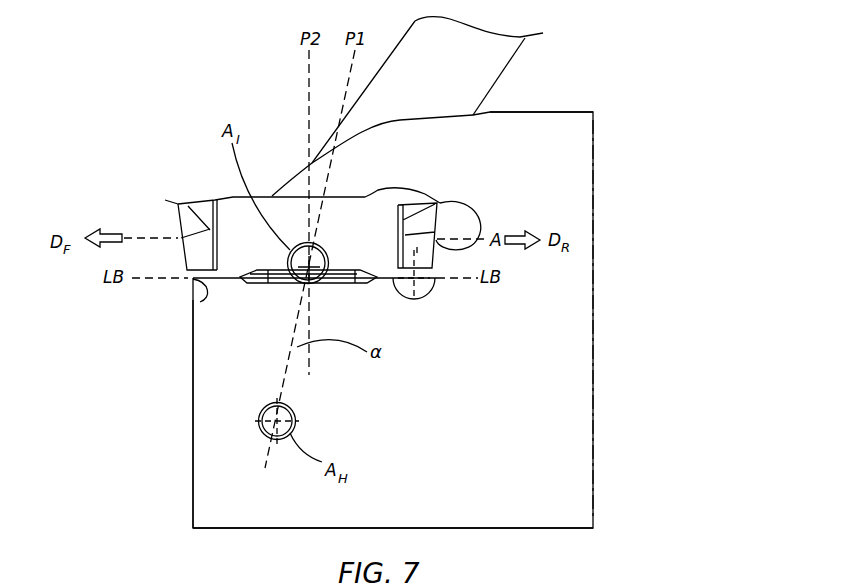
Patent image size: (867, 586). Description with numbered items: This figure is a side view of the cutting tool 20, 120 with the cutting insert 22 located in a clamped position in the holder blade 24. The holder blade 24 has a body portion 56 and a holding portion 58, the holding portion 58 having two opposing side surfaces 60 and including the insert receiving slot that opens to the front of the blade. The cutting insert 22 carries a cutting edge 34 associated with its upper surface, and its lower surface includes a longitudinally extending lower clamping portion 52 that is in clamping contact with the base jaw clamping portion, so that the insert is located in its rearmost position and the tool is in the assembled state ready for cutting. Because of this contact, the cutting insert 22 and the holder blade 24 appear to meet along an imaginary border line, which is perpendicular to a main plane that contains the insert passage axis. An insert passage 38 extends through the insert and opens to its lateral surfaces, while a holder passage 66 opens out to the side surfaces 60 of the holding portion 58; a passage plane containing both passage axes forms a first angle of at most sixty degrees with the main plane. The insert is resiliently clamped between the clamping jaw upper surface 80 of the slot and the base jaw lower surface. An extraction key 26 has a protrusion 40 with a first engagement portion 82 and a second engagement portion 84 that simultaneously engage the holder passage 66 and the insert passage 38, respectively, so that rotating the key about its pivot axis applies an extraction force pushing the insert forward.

The cutting tool 20 is at (165, 88).
The cutting insert 22 is at (157, 193).
The holder blade 24 is at (608, 292).
The extraction key 26 is at (497, 72).
The cutting edge 34 is at (165, 200).
The insert passage 38 is at (262, 291).
The protrusion 40 is at (321, 294).
The lower clamping portion 52 is at (193, 288).
The body portion 56 is at (623, 490).
The holding portion 58 is at (567, 152).
The side surface 60 is at (203, 503).
The holder passage 66 is at (237, 438).
The clamping jaw upper surface 80 is at (368, 188).
The first engagement portion 82 is at (290, 410).
The second engagement portion 84 is at (330, 285).
The cutting tool 120 is at (74, 577).